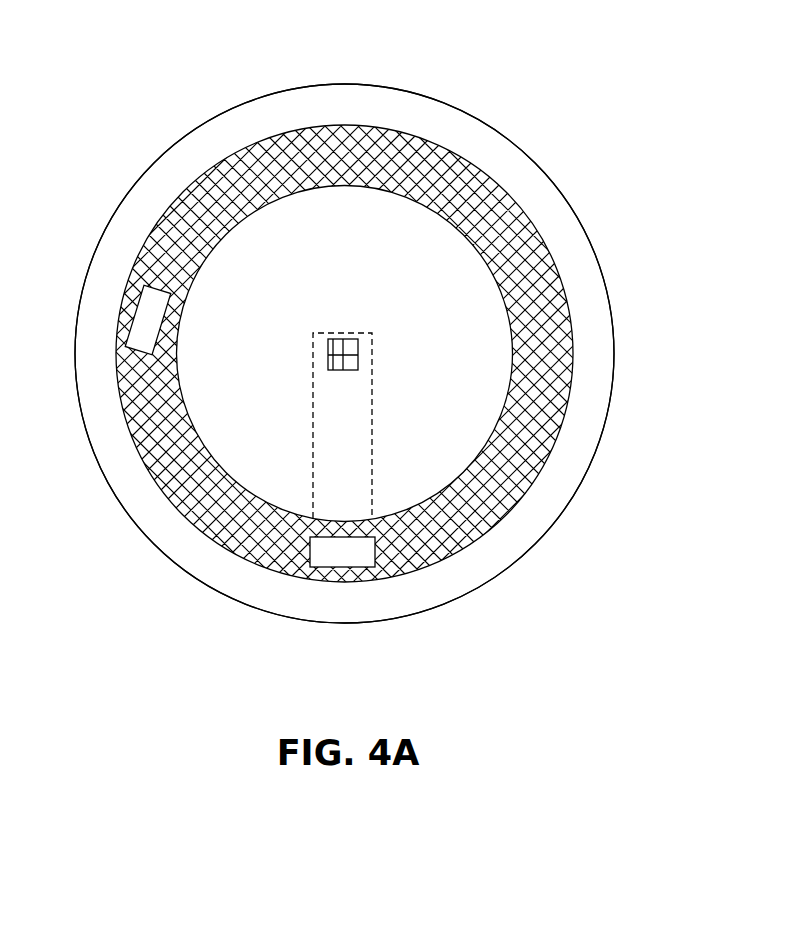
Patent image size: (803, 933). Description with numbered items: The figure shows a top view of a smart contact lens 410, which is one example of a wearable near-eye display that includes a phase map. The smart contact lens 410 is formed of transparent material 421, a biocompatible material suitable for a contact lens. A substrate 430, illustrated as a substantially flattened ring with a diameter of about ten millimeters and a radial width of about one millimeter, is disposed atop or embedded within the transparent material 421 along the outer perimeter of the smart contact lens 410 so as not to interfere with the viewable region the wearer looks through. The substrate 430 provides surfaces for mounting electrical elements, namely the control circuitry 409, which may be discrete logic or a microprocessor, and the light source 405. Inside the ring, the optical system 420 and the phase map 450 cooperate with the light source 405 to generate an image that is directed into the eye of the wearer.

The smart contact lens 410 is at (140, 66).
The transparent material 421 is at (110, 449).
The substrate 430 is at (195, 497).
The control circuitry 409 is at (147, 319).
The light source 405 is at (325, 564).
The optical system 420 is at (312, 398).
The phase map 450 is at (355, 340).